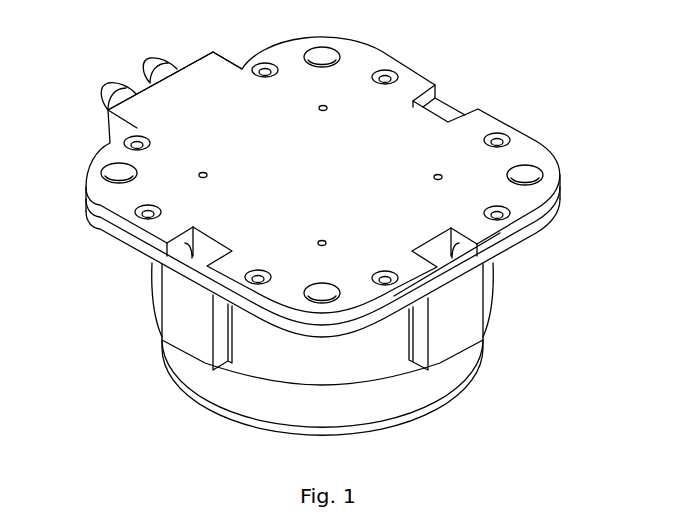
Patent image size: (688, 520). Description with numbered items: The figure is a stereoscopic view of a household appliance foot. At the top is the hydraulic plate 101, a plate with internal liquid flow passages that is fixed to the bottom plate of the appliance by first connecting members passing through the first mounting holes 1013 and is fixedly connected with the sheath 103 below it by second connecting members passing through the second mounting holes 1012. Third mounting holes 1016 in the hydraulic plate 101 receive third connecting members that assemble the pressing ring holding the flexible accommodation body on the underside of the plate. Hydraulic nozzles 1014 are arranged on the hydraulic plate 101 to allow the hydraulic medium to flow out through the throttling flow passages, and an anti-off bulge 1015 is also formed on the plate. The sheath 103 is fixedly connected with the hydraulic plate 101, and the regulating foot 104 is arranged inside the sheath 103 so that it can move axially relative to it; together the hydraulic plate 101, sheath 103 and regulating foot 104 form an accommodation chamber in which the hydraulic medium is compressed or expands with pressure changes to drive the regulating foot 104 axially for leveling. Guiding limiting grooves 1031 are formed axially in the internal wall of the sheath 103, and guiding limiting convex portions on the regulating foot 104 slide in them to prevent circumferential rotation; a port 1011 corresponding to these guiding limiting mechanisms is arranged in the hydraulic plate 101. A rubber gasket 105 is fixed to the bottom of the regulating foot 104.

The hydraulic plate 101 is at (353, 67).
The port 1011 is at (449, 106).
The second mounting hole 1012 is at (530, 177).
The first mounting hole 1013 is at (500, 221).
The hydraulic nozzle 1014 is at (107, 97).
The anti-off bulge 1015 is at (213, 50).
The third mounting hole 1016 is at (143, 207).
The sheath 103 is at (335, 363).
The guiding limiting groove 1031 is at (190, 313).
The regulating foot 104 is at (405, 392).
The rubber gasket 105 is at (447, 397).